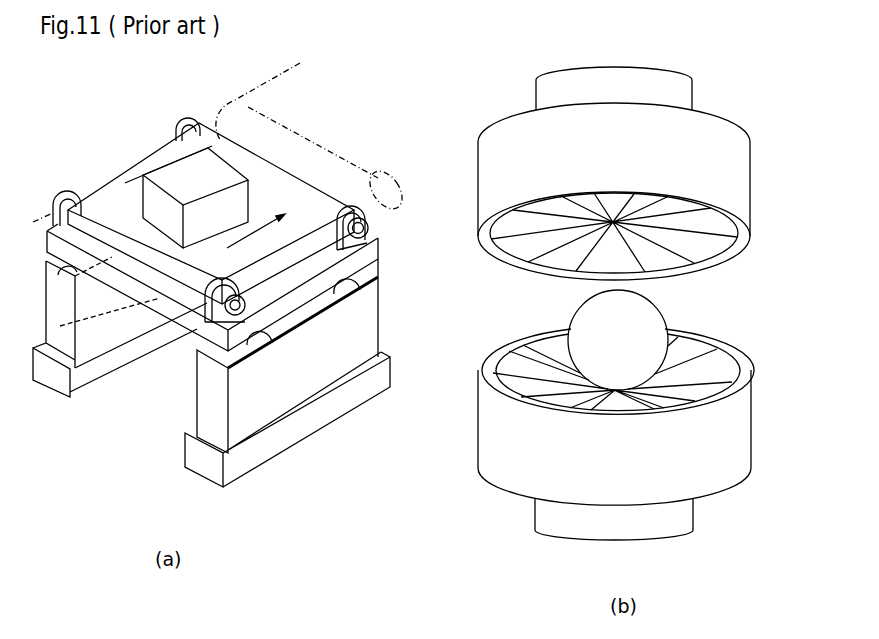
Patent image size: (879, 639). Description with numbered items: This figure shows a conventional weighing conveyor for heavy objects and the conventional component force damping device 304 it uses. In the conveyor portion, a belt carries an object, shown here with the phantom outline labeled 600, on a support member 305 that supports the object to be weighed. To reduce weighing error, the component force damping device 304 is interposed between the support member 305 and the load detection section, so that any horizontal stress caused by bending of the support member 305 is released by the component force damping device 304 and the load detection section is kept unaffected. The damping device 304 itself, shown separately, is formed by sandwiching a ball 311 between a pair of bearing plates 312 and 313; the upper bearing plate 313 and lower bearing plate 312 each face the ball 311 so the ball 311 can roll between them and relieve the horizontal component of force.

The workpiece / phantom cover 600 is at (230, 165).
The support member 305 is at (381, 249).
The component force damping device 304 is at (363, 292).
The bearing plate 313 is at (748, 168).
The ball 311 is at (663, 315).
The bearing plate 312 is at (750, 417).